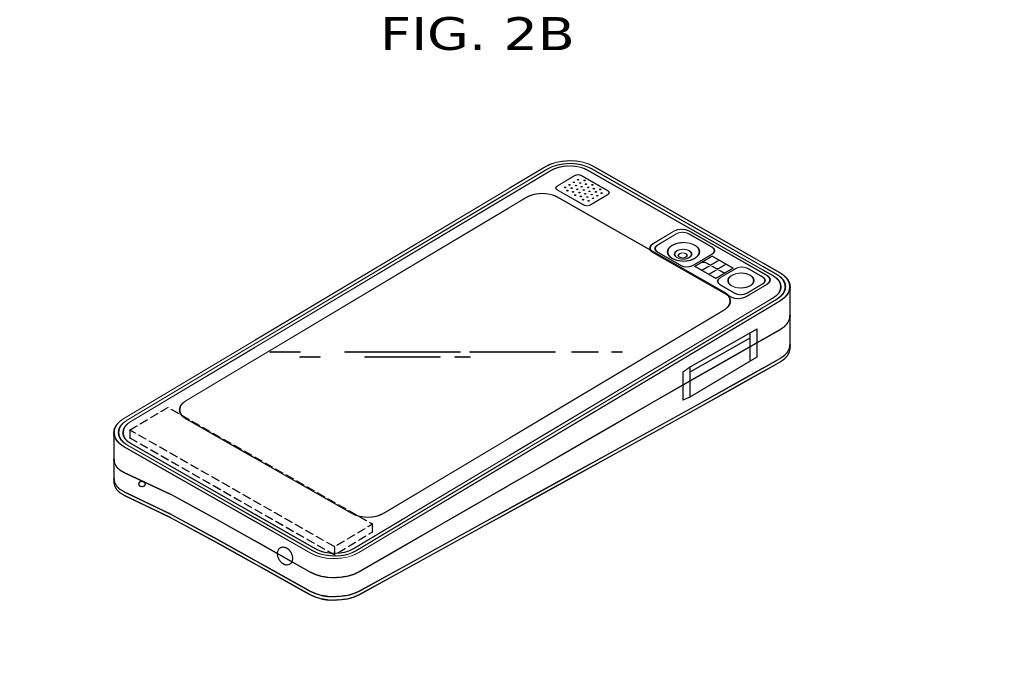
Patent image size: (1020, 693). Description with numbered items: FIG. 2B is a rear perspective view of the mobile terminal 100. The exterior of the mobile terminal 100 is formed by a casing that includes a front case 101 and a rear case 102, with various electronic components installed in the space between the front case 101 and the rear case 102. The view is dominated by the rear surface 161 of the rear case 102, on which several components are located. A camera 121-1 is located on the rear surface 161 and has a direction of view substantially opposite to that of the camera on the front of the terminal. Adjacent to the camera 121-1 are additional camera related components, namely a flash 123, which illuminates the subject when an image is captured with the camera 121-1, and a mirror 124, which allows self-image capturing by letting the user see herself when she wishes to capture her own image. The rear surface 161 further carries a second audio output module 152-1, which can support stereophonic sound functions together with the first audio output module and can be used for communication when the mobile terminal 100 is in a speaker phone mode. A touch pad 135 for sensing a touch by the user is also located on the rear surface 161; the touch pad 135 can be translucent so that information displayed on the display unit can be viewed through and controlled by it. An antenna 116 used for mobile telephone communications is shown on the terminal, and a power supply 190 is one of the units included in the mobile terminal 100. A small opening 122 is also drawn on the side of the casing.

The mobile terminal 100 is at (406, 211).
The front case 101 is at (790, 337).
The rear case 102 is at (788, 315).
The antenna 116 is at (284, 562).
The camera 121-1 is at (690, 250).
The microphone 122 is at (139, 487).
The flash 123 is at (726, 265).
The mirror 124 is at (745, 280).
The touch pad 135 is at (372, 308).
The second audio output module 152-1 is at (598, 190).
The rear surface 161 is at (568, 173).
The power supply 190 is at (150, 422).